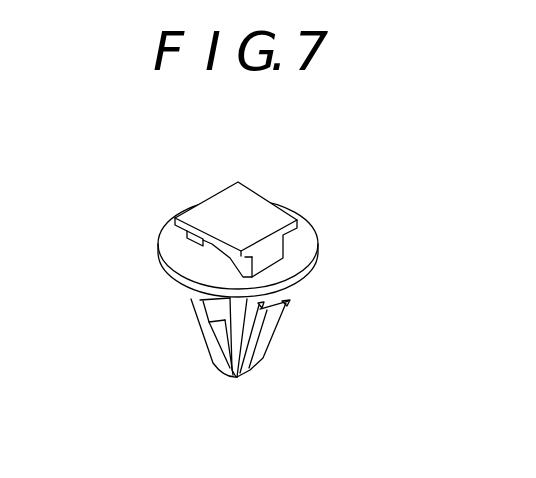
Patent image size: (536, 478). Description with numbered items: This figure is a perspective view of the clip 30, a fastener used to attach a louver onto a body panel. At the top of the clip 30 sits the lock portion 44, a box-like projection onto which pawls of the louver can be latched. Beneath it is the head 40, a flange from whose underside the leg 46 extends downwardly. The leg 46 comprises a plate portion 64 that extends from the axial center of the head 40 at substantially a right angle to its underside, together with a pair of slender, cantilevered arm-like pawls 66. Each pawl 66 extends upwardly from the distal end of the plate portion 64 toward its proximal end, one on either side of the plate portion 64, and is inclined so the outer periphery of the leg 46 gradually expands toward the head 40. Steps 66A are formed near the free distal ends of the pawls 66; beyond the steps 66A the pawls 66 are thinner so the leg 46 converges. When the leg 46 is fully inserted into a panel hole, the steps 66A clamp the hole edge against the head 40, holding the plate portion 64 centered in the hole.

The clip 30 is at (321, 177).
The head 40 is at (158, 250).
The lock portion 44 is at (247, 190).
The leg 46 is at (192, 402).
The plate portion 64 is at (204, 335).
The pawls 66 is at (193, 310).
The steps 66A is at (284, 305).